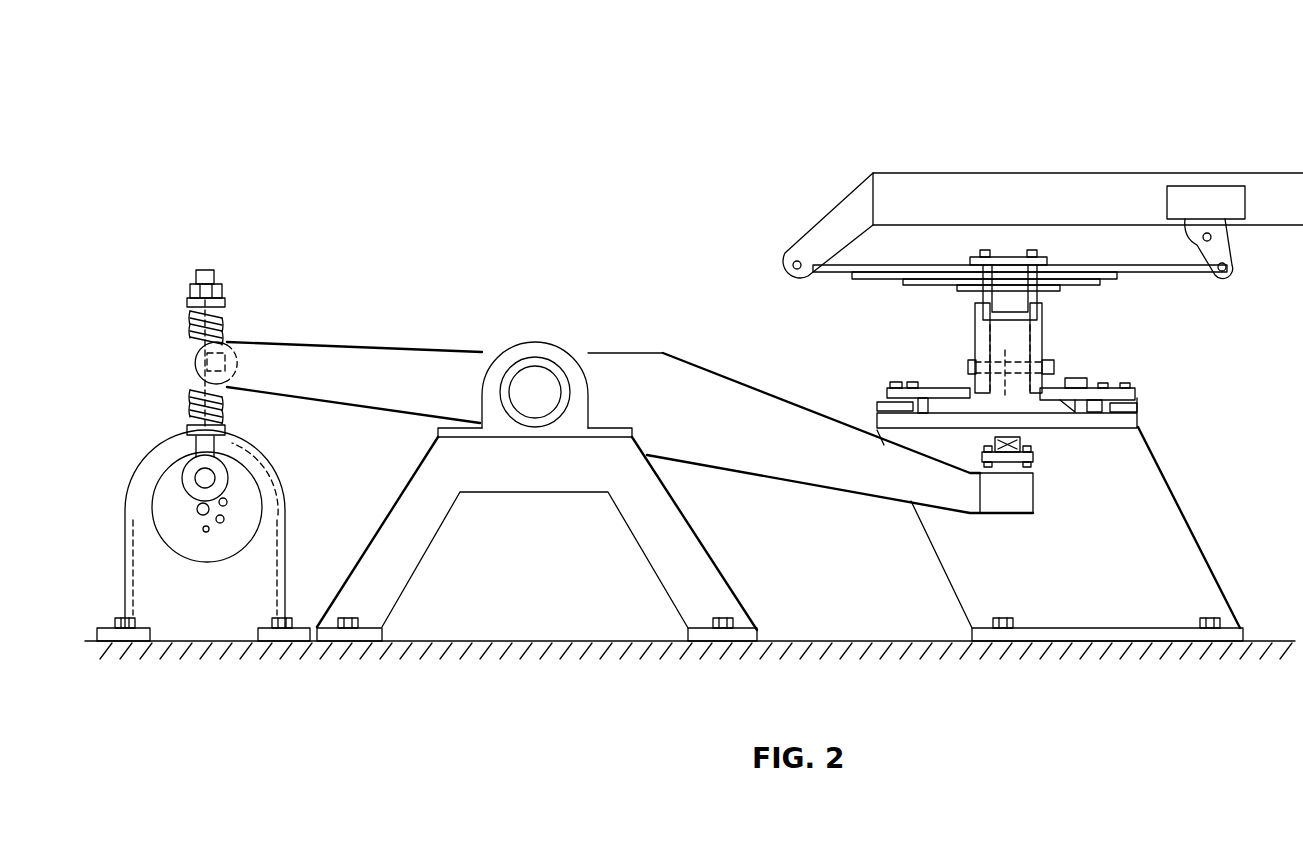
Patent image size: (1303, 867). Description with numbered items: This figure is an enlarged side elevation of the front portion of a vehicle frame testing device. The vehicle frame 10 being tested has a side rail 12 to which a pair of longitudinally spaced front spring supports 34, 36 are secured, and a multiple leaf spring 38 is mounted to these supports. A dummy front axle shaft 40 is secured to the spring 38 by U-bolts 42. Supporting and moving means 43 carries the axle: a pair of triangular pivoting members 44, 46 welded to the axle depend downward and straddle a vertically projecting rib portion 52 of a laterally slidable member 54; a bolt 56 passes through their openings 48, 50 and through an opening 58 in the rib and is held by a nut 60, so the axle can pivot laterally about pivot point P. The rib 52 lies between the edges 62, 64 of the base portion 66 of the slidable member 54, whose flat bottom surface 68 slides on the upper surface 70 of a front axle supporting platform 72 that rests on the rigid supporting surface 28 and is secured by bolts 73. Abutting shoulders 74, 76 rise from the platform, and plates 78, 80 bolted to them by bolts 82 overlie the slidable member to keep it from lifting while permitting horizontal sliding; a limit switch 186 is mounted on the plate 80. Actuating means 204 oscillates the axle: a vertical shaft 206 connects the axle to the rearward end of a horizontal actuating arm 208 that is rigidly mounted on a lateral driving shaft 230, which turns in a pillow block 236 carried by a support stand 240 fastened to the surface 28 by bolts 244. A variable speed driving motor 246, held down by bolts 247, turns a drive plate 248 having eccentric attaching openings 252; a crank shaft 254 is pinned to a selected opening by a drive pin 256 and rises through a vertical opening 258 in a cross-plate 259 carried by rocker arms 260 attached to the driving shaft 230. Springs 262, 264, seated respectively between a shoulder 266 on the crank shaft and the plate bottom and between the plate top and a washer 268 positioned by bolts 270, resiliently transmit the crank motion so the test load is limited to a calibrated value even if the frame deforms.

The vehicle frame 10 is at (1250, 168).
The side rail 12 is at (930, 185).
The rigid supporting surface 28 is at (848, 640).
The front spring support 34 is at (840, 212).
The front spring support 36 is at (1215, 230).
The multiple leaf spring 38 is at (1157, 273).
The dummy front axle shaft 40 is at (1048, 300).
The U-bolt 42 is at (983, 300).
The supporting and moving means 43 is at (1170, 441).
The pivoting member 44 is at (982, 325).
The pivoting member 46 is at (1042, 330).
The opening 48 is at (988, 348).
The opening 50 is at (1040, 350).
The rib portion 52 is at (1005, 412).
The laterally slidable member 54 is at (1020, 412).
The bolt 56 is at (975, 368).
The opening 58 is at (1005, 362).
The nut 60 is at (1053, 365).
The edge 62 is at (938, 418).
The edge 64 is at (1140, 420).
The base portion 66 is at (1068, 422).
The flat bottom surface 68 is at (950, 428).
The upper surface 70 is at (975, 428).
The front axle supporting platform 72 is at (1172, 478).
The bolt 73 is at (1003, 622).
The abutting shoulder 74 is at (887, 400).
The abutting shoulder 76 is at (1137, 405).
The plate 78 is at (955, 388).
The plate 80 is at (1128, 392).
The bolt 82 is at (910, 383).
The limit switch 186 is at (1086, 380).
The actuating means 204 is at (586, 328).
The shaft 206 is at (1033, 458).
The actuating arm 208 is at (688, 368).
The driving shaft 230 is at (535, 392).
The pillow block 236 is at (525, 345).
The support stand 240 is at (690, 553).
The bolt 244 is at (725, 623).
The variable speed driving motor 246 is at (262, 550).
The bolt 247 is at (130, 623).
The drive plate 248 is at (248, 512).
The eccentric attaching opening 252 is at (206, 534).
The crank shaft 254 is at (207, 452).
The drive pin 256 is at (212, 480).
The vertical opening 258 is at (232, 345).
The cross-plate 259 is at (185, 358).
The rocker arm 260 is at (397, 350).
The spring 262 is at (197, 400).
The spring 264 is at (197, 325).
The shoulder 266 is at (197, 430).
The washer 268 is at (198, 300).
The bolt 270 is at (216, 292).